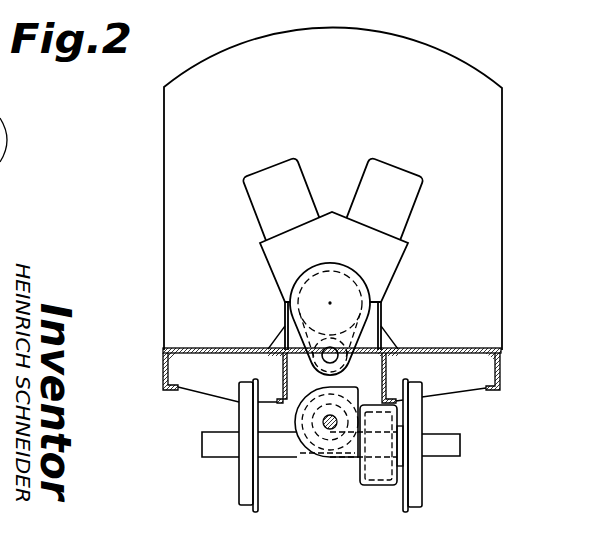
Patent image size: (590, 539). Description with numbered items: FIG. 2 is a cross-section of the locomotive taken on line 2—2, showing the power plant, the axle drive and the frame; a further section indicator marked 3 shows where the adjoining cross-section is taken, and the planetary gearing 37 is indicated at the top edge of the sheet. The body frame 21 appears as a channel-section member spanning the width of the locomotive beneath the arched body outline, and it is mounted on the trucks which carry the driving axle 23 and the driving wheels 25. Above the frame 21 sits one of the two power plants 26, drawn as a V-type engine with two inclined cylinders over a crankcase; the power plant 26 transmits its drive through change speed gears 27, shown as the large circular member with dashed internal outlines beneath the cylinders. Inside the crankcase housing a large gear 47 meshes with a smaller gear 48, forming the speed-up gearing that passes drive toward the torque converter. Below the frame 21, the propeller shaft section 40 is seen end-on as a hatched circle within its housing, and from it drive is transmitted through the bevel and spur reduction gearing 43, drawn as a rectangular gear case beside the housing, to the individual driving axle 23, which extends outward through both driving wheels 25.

The body frame 21 is at (501, 372).
The driving axle 23 is at (462, 444).
The driving wheel 25 is at (422, 485).
The power plant 26 is at (418, 210).
The change speed gears 27 is at (354, 283).
The propeller shaft section 40 is at (323, 420).
The bevel and spur reduction gearing 43 is at (373, 483).
The large gear 47 is at (382, 318).
The smaller gear 48 is at (383, 343).
The section line 2— 2 is at (293, 0).
The section line 3— 3 is at (531, 30).
The multiple planetary gearing 37 is at (542, 6).